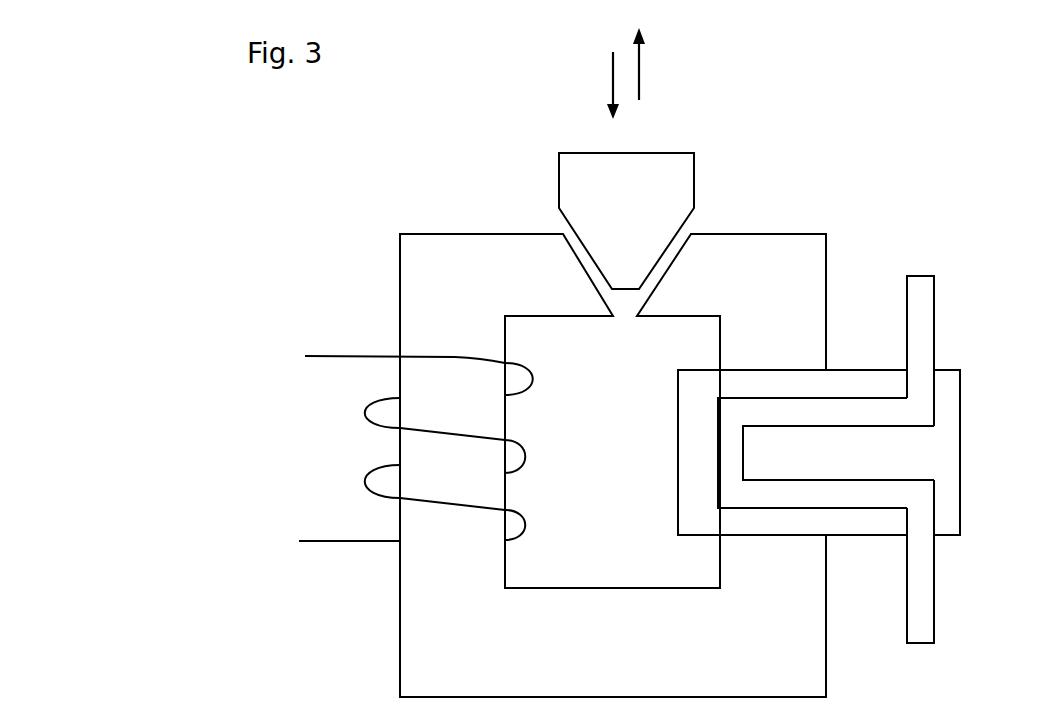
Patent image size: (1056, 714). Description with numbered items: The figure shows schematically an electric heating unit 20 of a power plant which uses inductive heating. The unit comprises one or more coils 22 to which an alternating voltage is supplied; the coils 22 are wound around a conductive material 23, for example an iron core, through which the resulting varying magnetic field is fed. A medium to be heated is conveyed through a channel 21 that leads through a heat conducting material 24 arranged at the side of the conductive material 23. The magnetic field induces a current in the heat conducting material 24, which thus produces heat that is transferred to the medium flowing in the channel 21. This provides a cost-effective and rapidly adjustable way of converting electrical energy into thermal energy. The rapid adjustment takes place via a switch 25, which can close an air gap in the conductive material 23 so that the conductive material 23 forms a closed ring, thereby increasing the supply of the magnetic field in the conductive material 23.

The electric heating unit 20 is at (888, 105).
The channel 21 is at (934, 592).
The coil 22 is at (317, 356).
The conductive material 23 is at (621, 648).
The heat conducting material 24 is at (932, 463).
The switch 25 is at (633, 207).